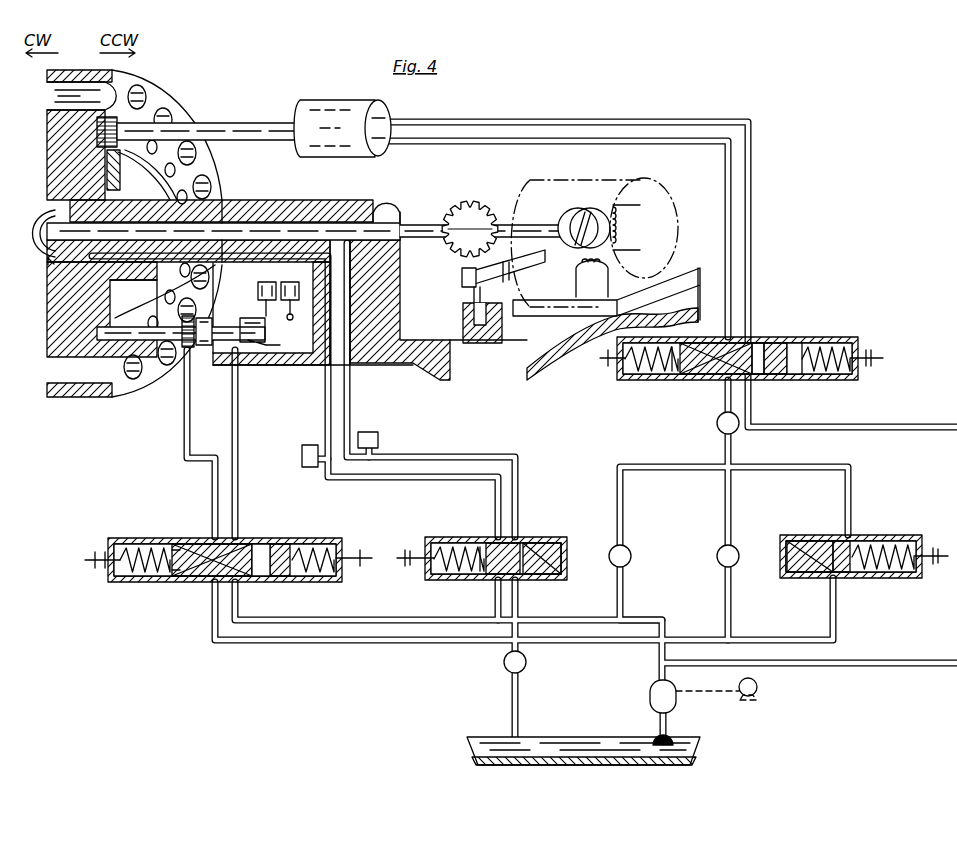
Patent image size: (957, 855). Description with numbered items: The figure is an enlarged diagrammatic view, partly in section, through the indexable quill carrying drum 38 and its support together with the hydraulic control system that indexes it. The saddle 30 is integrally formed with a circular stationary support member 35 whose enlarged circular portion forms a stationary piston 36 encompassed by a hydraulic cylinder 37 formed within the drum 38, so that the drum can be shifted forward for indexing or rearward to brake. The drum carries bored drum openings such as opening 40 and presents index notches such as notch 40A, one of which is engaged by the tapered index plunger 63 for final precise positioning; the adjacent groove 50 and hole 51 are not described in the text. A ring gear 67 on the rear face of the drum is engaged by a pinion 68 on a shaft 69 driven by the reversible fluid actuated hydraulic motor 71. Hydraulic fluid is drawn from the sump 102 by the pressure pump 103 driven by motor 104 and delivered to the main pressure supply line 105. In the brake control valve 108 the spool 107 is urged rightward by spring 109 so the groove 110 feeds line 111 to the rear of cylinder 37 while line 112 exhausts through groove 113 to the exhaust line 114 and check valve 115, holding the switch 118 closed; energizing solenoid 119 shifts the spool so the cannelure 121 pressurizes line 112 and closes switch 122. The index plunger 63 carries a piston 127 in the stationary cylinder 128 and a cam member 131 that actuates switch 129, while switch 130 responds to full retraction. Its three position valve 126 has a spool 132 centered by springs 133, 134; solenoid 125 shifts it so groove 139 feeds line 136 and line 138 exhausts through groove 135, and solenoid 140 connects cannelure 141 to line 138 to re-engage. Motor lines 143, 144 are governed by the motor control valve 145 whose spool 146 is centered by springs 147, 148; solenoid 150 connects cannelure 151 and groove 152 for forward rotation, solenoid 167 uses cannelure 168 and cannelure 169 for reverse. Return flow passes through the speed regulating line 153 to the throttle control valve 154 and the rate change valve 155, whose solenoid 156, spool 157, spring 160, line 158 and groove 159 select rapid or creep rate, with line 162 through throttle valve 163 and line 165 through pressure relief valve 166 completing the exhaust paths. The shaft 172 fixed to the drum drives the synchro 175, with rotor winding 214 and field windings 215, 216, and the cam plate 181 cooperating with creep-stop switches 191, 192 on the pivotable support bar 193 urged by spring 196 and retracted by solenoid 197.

The saddle 30 is at (487, 380).
The circular stationary support member 35 is at (245, 208).
The stationary piston 36 is at (62, 188).
The hydraulic cylinder 37 is at (50, 270).
The quill carrying drum 38 is at (47, 302).
The bored drum opening 40 is at (118, 393).
The index notch 40A is at (133, 306).
The groove 50 is at (47, 100).
The disk hole 51 is at (141, 86).
The index plunger 63 is at (152, 345).
The ring gear 67 is at (125, 180).
The pinion 68 is at (118, 165).
The shaft 69 is at (268, 118).
The fluid actuated hydraulic motor 71 is at (328, 108).
The sump or reservoir 102 is at (708, 744).
The pressure pump 103 is at (650, 691).
The motor 104 is at (756, 692).
The main pressure supply line 105 is at (408, 618).
The movable valve spool 107 is at (535, 578).
The brake control valve 108 is at (488, 558).
The spring 109 is at (444, 582).
The valve spool groove 110 is at (481, 578).
The hydraulic line 111 is at (327, 385).
The line 112 is at (348, 385).
The valve spool groove 113 is at (508, 542).
The exhaust line 114 is at (518, 612).
The check valve 115 is at (526, 662).
The pressure actuated electrical switch 118 is at (302, 458).
The solenoid 119 is at (406, 566).
The cannelure 121 is at (548, 542).
The pressure actuated electric switch 122 is at (378, 441).
The solenoid 125 is at (364, 552).
The three position valve 126 is at (225, 564).
The piston 127 is at (195, 350).
The stationary hydraulic cylinder 128 is at (260, 304).
The position indicating switch 129 is at (258, 287).
The switch 130 is at (303, 315).
The cam member 131 is at (276, 342).
The valve spool 132 is at (212, 582).
The spring 133 is at (128, 584).
The spring 134 is at (302, 584).
The valve spool groove 135 is at (180, 582).
The line 136 is at (187, 433).
The line 138 is at (236, 418).
The groove 139 is at (192, 542).
The solenoid 140 is at (92, 558).
The cannelure 141 is at (270, 542).
The hydraulic line 143 is at (600, 143).
The hydraulic line 144 is at (578, 126).
The three position motor control valve 145 is at (728, 343).
The valve spool 146 is at (758, 376).
The spring 147 is at (814, 376).
The spring 148 is at (645, 376).
The solenoid 150 is at (866, 362).
The cannelure 151 is at (698, 376).
The valve spool groove 152 is at (676, 376).
The motor speed regulating line 153 is at (731, 455).
The throttle control valve 154 is at (717, 423).
The rate change valve 155 is at (866, 548).
The solenoid 156 is at (930, 557).
The valve spool 157 is at (842, 540).
The line 158 is at (793, 470).
The valve spool groove 159 is at (796, 574).
The spring 160 is at (884, 574).
The line 162 is at (731, 513).
The throttle control valve 163 is at (736, 561).
The line 165 is at (625, 527).
The pressure relief valve 166 is at (631, 556).
The solenoid 167 is at (600, 360).
The cannelure 168 is at (792, 342).
The valve spool cannelure 169 is at (768, 342).
The shaft 172 is at (412, 230).
The synchro 175 is at (628, 174).
The cam plate 181 is at (480, 212).
The creep-stop switch 191 is at (462, 274).
The creep-stop switch 192 is at (508, 252).
The pivotable support bar 193 is at (506, 284).
The spring 196 is at (472, 294).
The solenoid 197 is at (499, 340).
The rotor winding 214 is at (620, 232).
The field winding 215 is at (580, 210).
The field winding 216 is at (595, 278).